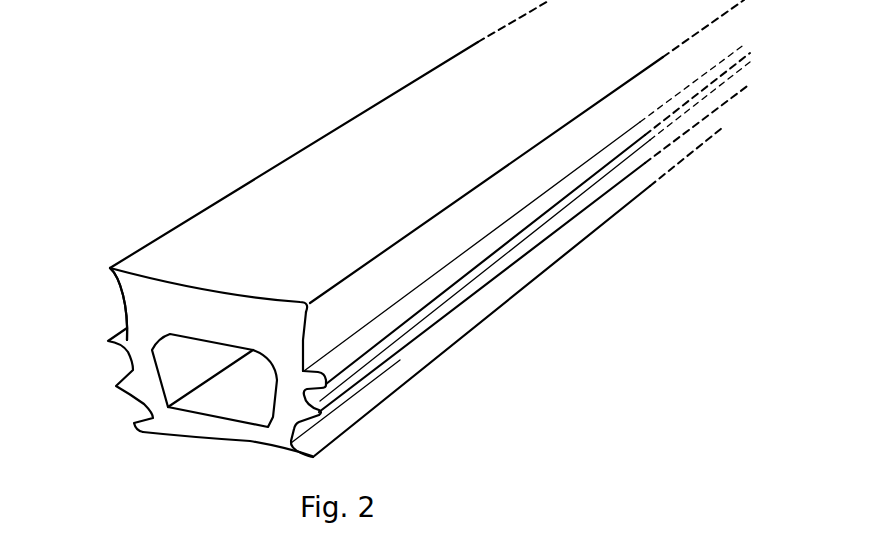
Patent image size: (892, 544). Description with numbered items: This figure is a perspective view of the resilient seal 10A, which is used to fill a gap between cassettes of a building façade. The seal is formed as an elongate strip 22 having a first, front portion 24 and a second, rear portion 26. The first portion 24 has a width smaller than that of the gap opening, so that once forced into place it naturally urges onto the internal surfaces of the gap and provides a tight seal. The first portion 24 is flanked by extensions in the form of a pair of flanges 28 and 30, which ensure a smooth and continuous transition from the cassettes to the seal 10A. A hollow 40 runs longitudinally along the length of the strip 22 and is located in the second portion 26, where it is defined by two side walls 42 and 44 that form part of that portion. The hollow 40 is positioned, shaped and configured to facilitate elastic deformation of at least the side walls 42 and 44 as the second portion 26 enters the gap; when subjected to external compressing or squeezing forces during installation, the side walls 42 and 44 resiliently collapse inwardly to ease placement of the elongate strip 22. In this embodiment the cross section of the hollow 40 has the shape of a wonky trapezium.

The resilient seal 10A is at (303, 126).
The elongate strip 22 is at (395, 125).
The flange 28 is at (110, 267).
The first portion 24 is at (102, 268).
The second portion 26 is at (103, 340).
The flange 30 is at (310, 303).
The hollow 40 is at (238, 397).
The side wall 42 is at (143, 382).
The side wall 44 is at (293, 397).